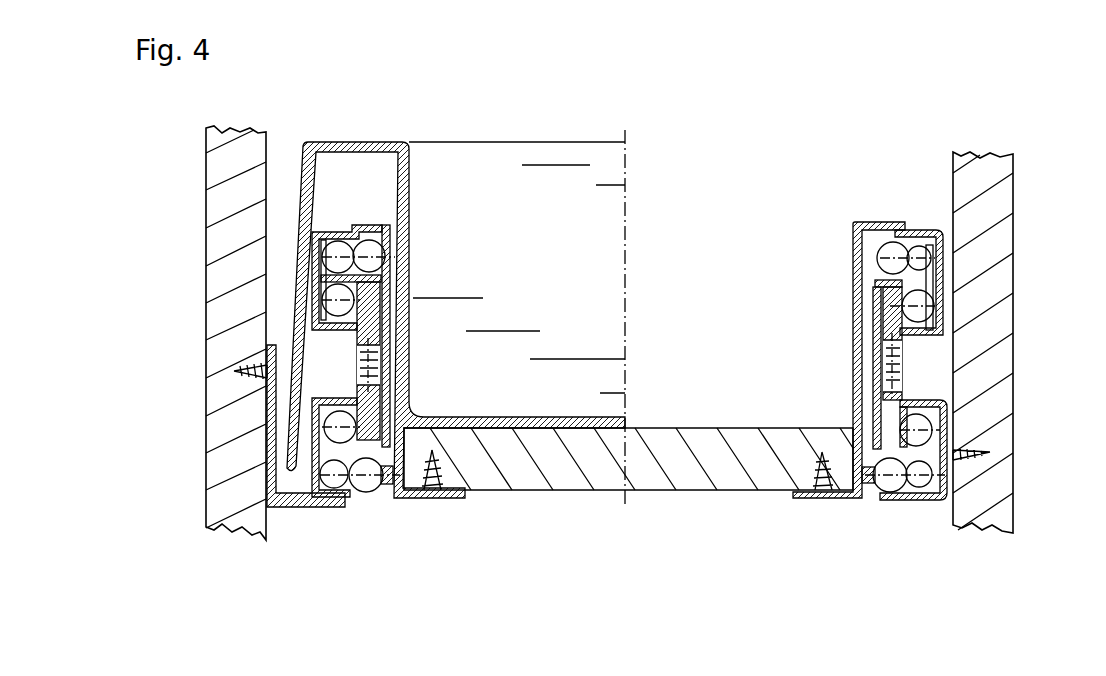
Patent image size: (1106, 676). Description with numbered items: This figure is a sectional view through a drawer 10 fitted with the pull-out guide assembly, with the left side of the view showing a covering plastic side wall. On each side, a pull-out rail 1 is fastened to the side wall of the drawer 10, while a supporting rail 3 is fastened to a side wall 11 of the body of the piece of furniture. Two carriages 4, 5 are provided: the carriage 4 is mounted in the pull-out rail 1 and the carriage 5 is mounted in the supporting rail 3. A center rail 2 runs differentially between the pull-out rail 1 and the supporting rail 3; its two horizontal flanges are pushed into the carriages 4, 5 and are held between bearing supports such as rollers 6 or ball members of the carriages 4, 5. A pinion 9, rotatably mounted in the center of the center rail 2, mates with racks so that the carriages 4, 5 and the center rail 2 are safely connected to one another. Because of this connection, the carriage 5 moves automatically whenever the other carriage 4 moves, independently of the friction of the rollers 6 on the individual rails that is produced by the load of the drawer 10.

The pull-out rail 1 is at (300, 284).
The center rail 2 is at (362, 335).
The supporting rail 3 is at (300, 456).
The carriage 4 is at (412, 245).
The carriage 5 is at (363, 475).
The roller 6 is at (382, 490).
The pinion 9 is at (358, 382).
The drawer 10 is at (579, 508).
The side wall 11 is at (242, 528).